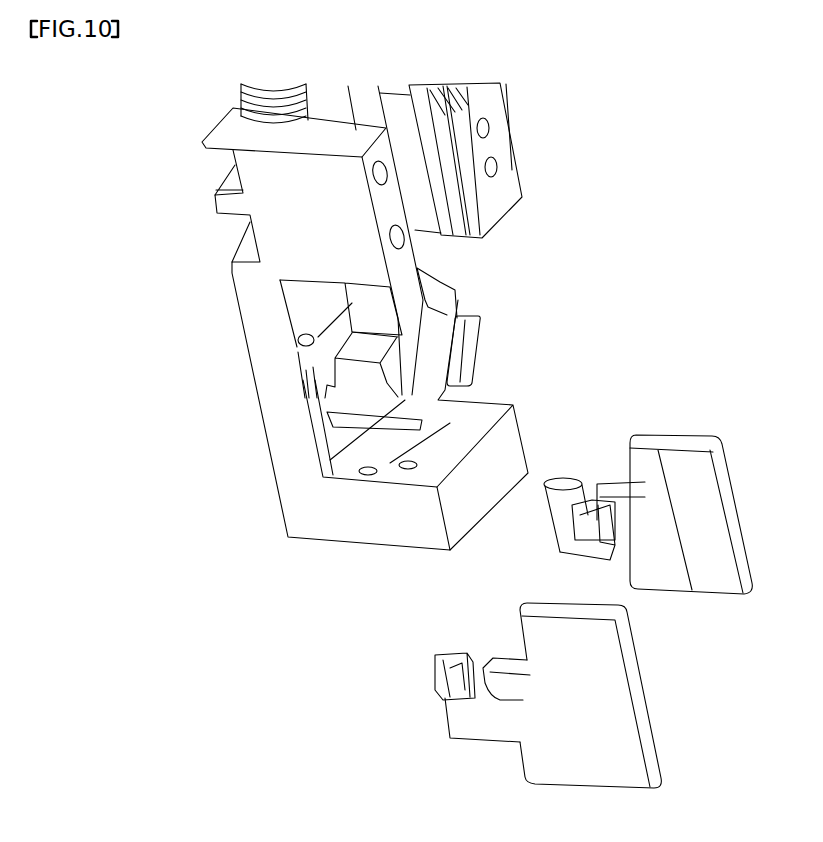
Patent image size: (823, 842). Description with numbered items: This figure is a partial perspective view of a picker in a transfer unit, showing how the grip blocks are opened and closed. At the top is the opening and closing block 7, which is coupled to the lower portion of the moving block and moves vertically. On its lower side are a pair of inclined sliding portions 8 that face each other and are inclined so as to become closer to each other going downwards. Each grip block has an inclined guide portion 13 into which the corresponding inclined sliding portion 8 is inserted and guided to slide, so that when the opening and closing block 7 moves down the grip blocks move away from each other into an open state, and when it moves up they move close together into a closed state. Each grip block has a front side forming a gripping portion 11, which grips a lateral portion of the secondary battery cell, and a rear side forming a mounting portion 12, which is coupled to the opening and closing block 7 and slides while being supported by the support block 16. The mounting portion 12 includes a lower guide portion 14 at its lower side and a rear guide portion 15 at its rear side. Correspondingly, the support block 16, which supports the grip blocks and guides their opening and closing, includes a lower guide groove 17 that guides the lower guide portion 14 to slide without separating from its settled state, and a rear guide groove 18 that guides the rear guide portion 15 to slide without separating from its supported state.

The opening and closing block 7 is at (413, 303).
The inclined sliding portion 8 is at (463, 347).
The gripping portion 11 is at (683, 468).
The mounting portion 12 is at (492, 724).
The inclined guide portion 13 is at (603, 535).
The lower guide portion 14 is at (600, 563).
The rear guide portion 15 is at (548, 487).
The support block 16 is at (312, 493).
The lower guide groove 17 is at (250, 104).
The rear guide groove 18 is at (317, 365).